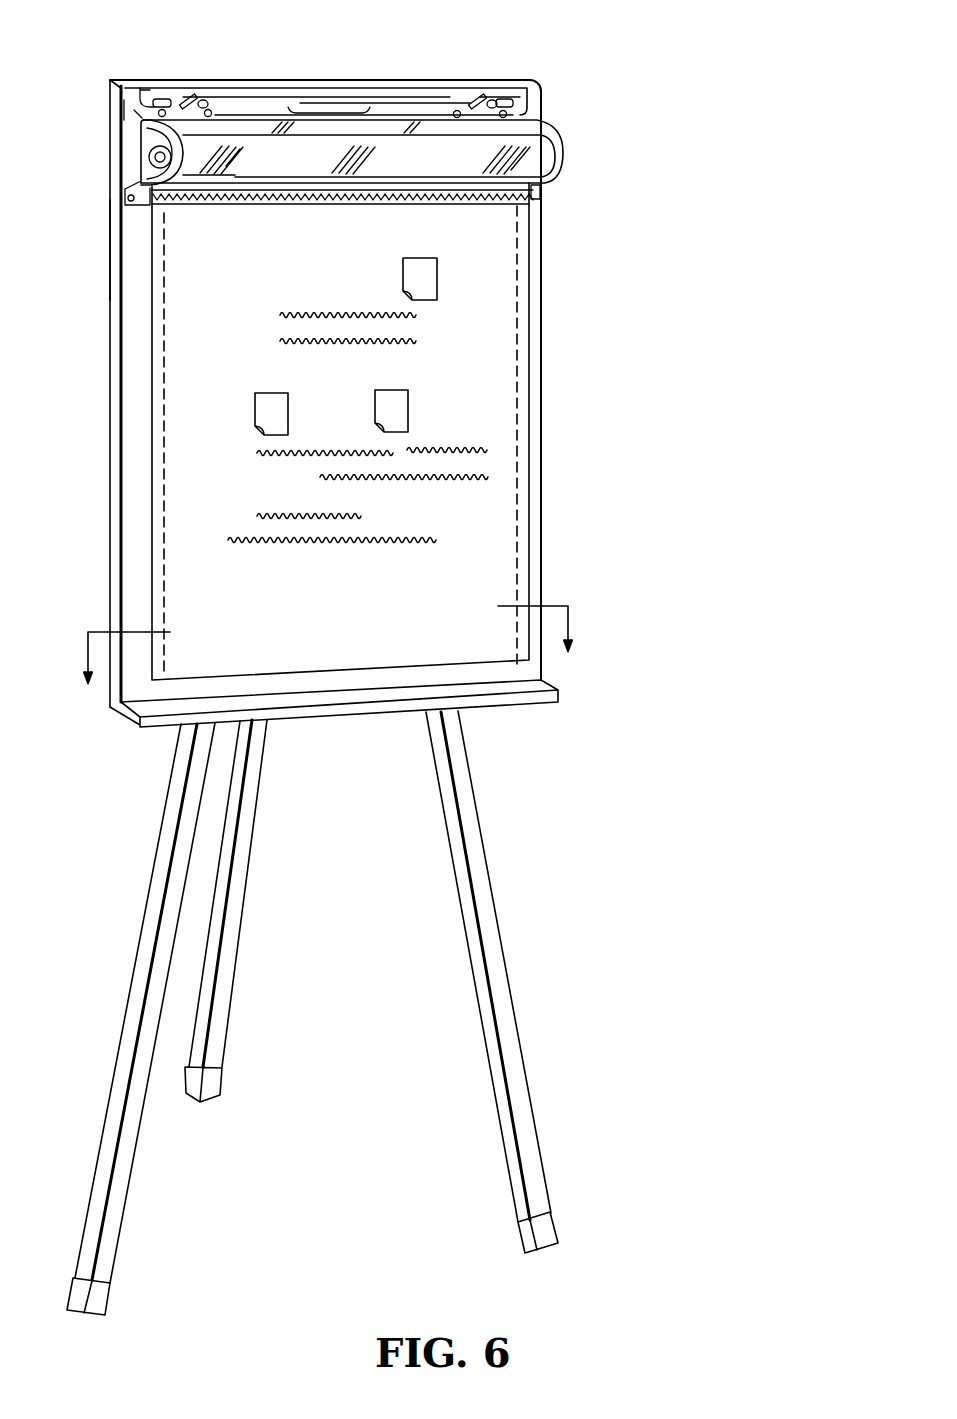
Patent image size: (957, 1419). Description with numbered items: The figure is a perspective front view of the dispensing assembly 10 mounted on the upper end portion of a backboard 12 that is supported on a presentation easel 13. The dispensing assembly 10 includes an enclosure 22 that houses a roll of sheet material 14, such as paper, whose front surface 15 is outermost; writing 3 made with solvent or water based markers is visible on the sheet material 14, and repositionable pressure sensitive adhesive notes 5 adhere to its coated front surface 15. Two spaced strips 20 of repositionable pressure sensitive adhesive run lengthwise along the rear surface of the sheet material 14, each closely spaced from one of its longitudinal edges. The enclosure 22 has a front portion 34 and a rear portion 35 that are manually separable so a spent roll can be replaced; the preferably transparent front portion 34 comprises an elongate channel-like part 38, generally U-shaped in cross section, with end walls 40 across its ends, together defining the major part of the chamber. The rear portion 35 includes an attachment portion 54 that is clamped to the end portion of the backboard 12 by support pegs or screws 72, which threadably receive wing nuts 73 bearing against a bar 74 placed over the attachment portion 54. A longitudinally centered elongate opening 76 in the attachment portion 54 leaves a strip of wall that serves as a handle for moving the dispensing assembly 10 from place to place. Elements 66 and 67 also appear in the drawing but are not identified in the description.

The dispensing assembly 10 is at (570, 154).
The backboard 12 is at (556, 366).
The presentation easel 13 is at (480, 891).
The sheet material 14 is at (500, 517).
The front surface 15 is at (317, 287).
The strips of repositionable pressure sensitive adhesive 20 is at (160, 312).
The enclosure 22 is at (112, 104).
The front portion 34 is at (548, 132).
The rear portion 35 is at (148, 93).
The channel-like part 38 is at (532, 160).
The end walls 40 is at (128, 197).
The attachment portion 54 is at (132, 118).
The clip tab 66 is at (162, 100).
The roller hub 67 is at (147, 160).
The support pegs or screws 72 is at (203, 101).
The wing nuts 73 is at (187, 100).
The bar 74 is at (408, 102).
The elongate opening 76 is at (357, 110).
The writing 3 is at (407, 340).
The repositionable pressure sensitive adhesive notes 5 is at (400, 410).